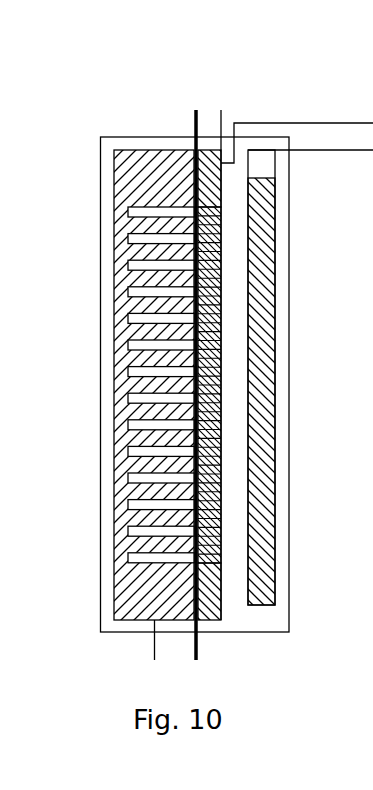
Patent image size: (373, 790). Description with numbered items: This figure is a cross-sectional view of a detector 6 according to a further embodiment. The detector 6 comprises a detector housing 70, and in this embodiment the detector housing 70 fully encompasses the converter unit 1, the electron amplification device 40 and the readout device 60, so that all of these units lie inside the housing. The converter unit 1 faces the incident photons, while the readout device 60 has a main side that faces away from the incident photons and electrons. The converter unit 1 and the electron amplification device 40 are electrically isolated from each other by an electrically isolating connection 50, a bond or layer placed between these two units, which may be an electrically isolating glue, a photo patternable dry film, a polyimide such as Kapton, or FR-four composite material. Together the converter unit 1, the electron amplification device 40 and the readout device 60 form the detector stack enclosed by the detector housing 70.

The detector 6 is at (84, 81).
The converter unit 1 is at (156, 151).
The detector housing 70 is at (100, 391).
The electrically isolating connection 50 is at (194, 572).
The electron amplification device 40 is at (222, 620).
The readout device 60 is at (275, 565).